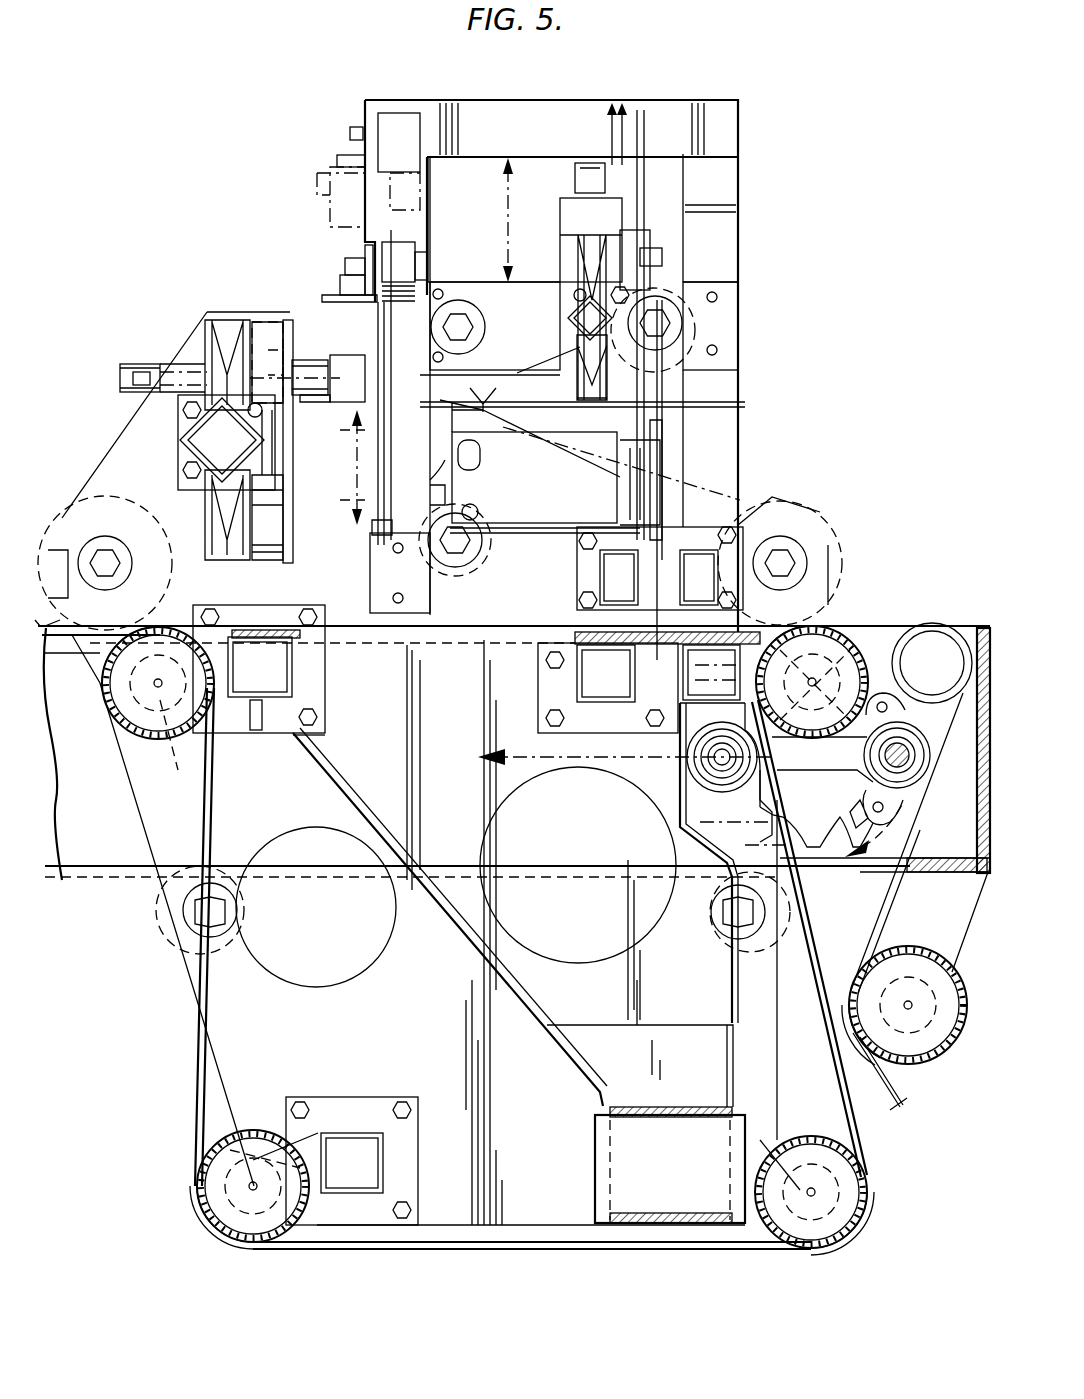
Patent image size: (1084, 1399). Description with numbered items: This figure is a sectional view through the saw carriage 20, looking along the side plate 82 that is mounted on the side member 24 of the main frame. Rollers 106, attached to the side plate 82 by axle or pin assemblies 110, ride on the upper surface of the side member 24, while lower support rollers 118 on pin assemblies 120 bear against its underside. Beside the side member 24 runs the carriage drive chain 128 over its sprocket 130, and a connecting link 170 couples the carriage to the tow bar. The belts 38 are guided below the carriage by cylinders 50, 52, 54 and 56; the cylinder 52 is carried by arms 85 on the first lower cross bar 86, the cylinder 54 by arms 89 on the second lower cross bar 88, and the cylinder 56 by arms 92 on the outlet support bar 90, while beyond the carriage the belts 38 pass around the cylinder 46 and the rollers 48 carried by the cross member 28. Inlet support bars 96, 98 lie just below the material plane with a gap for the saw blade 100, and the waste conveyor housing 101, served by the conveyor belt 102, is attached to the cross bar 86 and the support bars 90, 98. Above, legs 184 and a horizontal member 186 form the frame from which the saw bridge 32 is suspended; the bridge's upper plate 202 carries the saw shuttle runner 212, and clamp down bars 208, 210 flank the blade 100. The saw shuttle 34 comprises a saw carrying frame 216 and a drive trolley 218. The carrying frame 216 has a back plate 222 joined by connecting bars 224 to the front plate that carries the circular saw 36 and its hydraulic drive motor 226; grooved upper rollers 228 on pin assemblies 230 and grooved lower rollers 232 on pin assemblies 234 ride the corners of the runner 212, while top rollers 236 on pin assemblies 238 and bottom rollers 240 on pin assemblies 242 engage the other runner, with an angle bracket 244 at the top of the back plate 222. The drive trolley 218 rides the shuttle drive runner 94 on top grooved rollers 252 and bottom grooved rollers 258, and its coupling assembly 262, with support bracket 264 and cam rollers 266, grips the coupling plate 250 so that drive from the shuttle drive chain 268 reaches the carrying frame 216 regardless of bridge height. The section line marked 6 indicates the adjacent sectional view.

The section line 6- 6 is at (793, 312).
The saw carriage 20 is at (268, 148).
The side member 24 is at (103, 832).
The cross member 28 is at (988, 836).
The saw bridge 32 is at (487, 274).
The saw shuttle 34 is at (306, 290).
The circular saw 36 is at (722, 460).
The belts 38 is at (197, 1058).
The cylinder 46 is at (912, 1064).
The rollers 48 is at (932, 640).
The cylinder 50 is at (838, 633).
The cylinder 52 is at (842, 1244).
The cylinder 54 is at (258, 1240).
The cylinder 56 is at (107, 703).
The side plate 82 is at (172, 850).
The arms 85 is at (757, 1160).
The first lower cross bar 86 is at (597, 1163).
The second lower cross bar 88 is at (365, 1135).
The arms 89 is at (315, 1132).
The outlet support bar 90 is at (247, 690).
The arms 92 is at (165, 735).
The shuttle drive runner 94 is at (185, 456).
The inlet support bar 96 is at (577, 680).
The inlet support bar 98 is at (682, 737).
The saw blade 100 is at (740, 404).
The waste conveyor housing 101 is at (528, 1020).
The conveyor belt 102 is at (688, 1106).
The rollers 106 is at (82, 520).
The axle or pin assembly 110 is at (116, 562).
The lower support rollers 118 is at (232, 924).
The axle or pin assemblies 120 is at (228, 905).
The carriage drive chain 128 is at (893, 706).
The sprocket 130 is at (842, 802).
The connecting link 170 is at (837, 769).
The legs 184 is at (727, 192).
The horizontal member 186 is at (560, 146).
The upper plate 202 is at (535, 346).
The clamp down bar 208 is at (700, 597).
The clamp down bar 210 is at (602, 573).
The saw shuttle runner 212 is at (570, 312).
The saw carrying frame 216 is at (653, 246).
The drive trolley 218 is at (303, 510).
The back plate 222 is at (373, 530).
The connecting bars 224 is at (490, 400).
The hydraulic drive motor 226 is at (557, 489).
The grooved upper rollers 228 is at (575, 270).
The pin assemblies 230 is at (662, 258).
The grooved lower rollers 232 is at (577, 380).
The pin assemblies 234 is at (737, 361).
The top rollers 236 is at (397, 256).
The pin assemblies 238 is at (432, 266).
The bottom rollers 240 is at (393, 383).
The pin assemblies 242 is at (432, 492).
The angle bracket 244 is at (347, 272).
The coupling plate 250 is at (349, 528).
The top grooved rollers 252 is at (222, 330).
The bottom grooved rollers 258 is at (208, 547).
The coupling assembly 262 is at (289, 563).
The support bracket 264 is at (312, 362).
The cam rollers 266 is at (347, 398).
The shuttle drive chain 268 is at (138, 362).